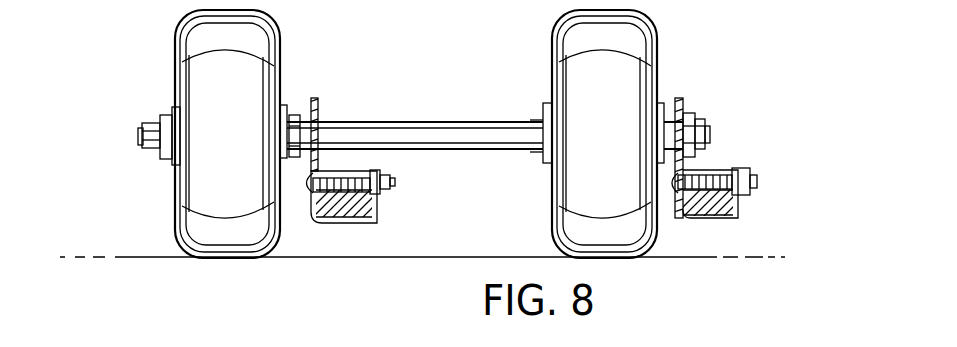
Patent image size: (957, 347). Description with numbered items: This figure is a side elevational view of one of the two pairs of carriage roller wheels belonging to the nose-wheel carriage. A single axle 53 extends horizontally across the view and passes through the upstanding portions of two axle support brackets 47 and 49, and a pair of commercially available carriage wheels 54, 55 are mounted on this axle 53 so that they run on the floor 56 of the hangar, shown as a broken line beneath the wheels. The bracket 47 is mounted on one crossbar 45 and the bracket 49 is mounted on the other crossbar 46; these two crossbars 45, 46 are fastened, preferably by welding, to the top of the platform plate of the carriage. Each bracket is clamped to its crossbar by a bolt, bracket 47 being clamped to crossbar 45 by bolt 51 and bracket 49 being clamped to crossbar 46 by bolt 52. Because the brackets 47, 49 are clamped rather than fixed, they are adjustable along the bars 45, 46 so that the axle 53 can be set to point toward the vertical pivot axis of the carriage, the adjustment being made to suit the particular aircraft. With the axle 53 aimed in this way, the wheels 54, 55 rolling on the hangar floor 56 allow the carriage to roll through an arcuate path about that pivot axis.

The carriage wheel 55 is at (247, 100).
The carriage wheel 54 is at (585, 80).
The axle 53 is at (450, 128).
The axle support bracket 49 is at (318, 113).
The crossbar 46 is at (367, 207).
The bolt 52 is at (393, 185).
The axle support bracket 47 is at (683, 100).
The crossbar 45 is at (708, 222).
The bolt 51 is at (757, 183).
The floor 56 is at (145, 257).